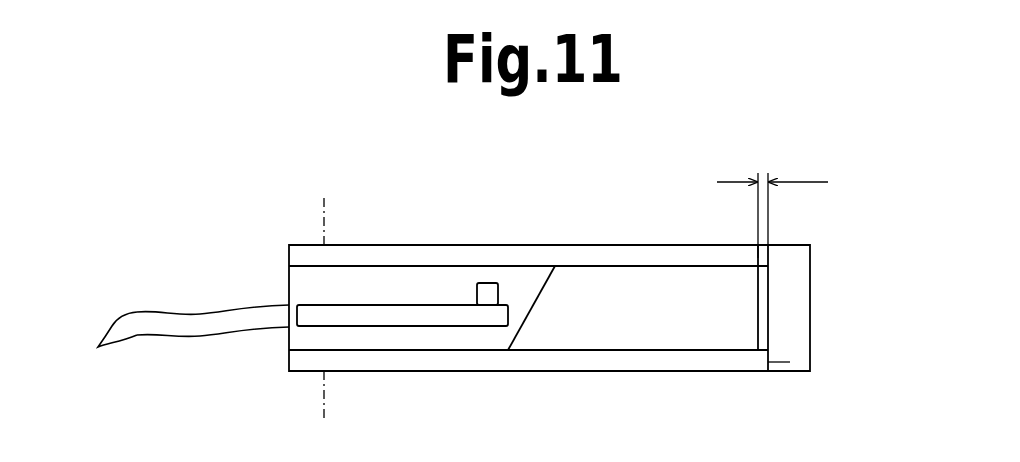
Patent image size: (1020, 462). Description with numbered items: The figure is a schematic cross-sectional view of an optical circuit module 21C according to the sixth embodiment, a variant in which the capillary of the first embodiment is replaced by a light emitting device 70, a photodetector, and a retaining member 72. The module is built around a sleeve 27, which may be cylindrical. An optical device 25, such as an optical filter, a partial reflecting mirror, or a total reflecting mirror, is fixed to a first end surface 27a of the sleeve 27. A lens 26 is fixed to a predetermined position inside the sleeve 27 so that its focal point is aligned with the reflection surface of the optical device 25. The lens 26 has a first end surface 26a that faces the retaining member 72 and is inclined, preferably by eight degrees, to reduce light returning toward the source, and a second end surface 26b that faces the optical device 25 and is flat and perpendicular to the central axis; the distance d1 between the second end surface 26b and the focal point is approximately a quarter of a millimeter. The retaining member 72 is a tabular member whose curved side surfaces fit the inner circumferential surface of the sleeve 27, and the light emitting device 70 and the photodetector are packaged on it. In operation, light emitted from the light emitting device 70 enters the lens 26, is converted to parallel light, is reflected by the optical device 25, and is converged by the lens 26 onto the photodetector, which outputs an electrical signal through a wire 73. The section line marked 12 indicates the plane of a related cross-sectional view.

The section line XII-XII 12 is at (324, 198).
The optical circuit module 21C is at (614, 240).
The optical device 25 is at (800, 258).
The lens 26 is at (622, 340).
The first end surface of the lens 26a is at (546, 283).
The second end surface of the lens 26b is at (758, 298).
The sleeve 27 is at (468, 258).
The first end surface of the sleeve 27a is at (790, 362).
The light emitting device 70 is at (488, 280).
The retaining member 72 is at (330, 295).
The wire 73 is at (172, 339).
The distance d1 is at (772, 200).